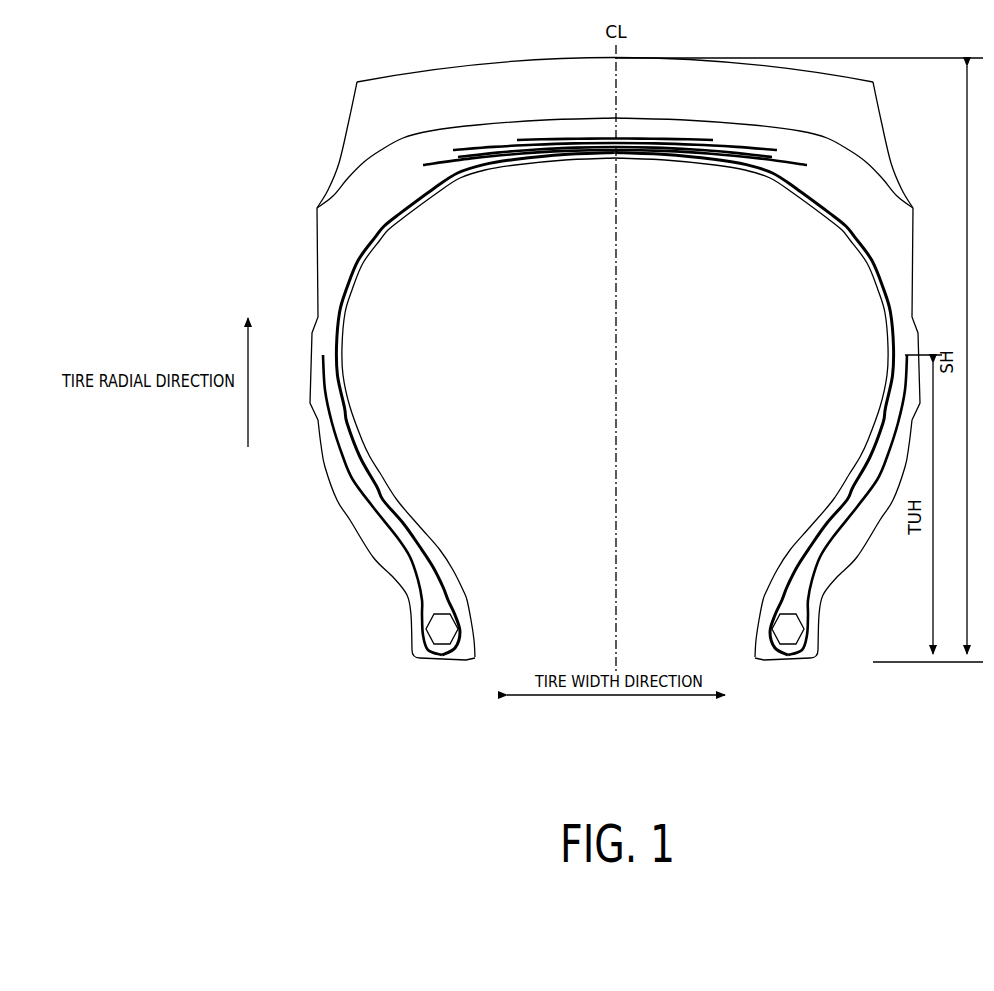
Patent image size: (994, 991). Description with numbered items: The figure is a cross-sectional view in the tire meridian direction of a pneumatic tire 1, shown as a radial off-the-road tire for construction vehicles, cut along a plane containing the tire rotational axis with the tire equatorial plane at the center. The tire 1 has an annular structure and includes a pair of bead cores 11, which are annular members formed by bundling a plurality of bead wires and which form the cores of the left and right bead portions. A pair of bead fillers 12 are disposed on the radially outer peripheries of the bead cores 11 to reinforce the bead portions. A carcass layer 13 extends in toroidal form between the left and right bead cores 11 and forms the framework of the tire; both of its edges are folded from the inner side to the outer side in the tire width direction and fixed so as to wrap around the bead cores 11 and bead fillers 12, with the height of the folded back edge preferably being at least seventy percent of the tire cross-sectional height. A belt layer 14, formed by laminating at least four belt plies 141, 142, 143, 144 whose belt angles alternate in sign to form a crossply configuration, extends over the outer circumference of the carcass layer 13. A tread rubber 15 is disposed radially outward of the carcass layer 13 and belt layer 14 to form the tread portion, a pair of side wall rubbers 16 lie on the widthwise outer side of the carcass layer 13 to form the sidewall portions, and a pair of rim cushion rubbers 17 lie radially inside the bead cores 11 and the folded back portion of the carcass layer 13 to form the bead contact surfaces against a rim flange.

The pneumatic tire 1 is at (868, 50).
The bead core 11 is at (433, 633).
The bead filler 12 is at (437, 600).
The carcass layer 13 is at (832, 517).
The belt layer 14 is at (615, 192).
The belt ply 141 is at (767, 168).
The belt ply 142 is at (730, 155).
The belt ply 143 is at (675, 150).
The belt ply 144 is at (615, 176).
The tread rubber 15 is at (872, 127).
The side wall rubber 16 is at (315, 323).
The rim cushion rubber 17 is at (430, 657).